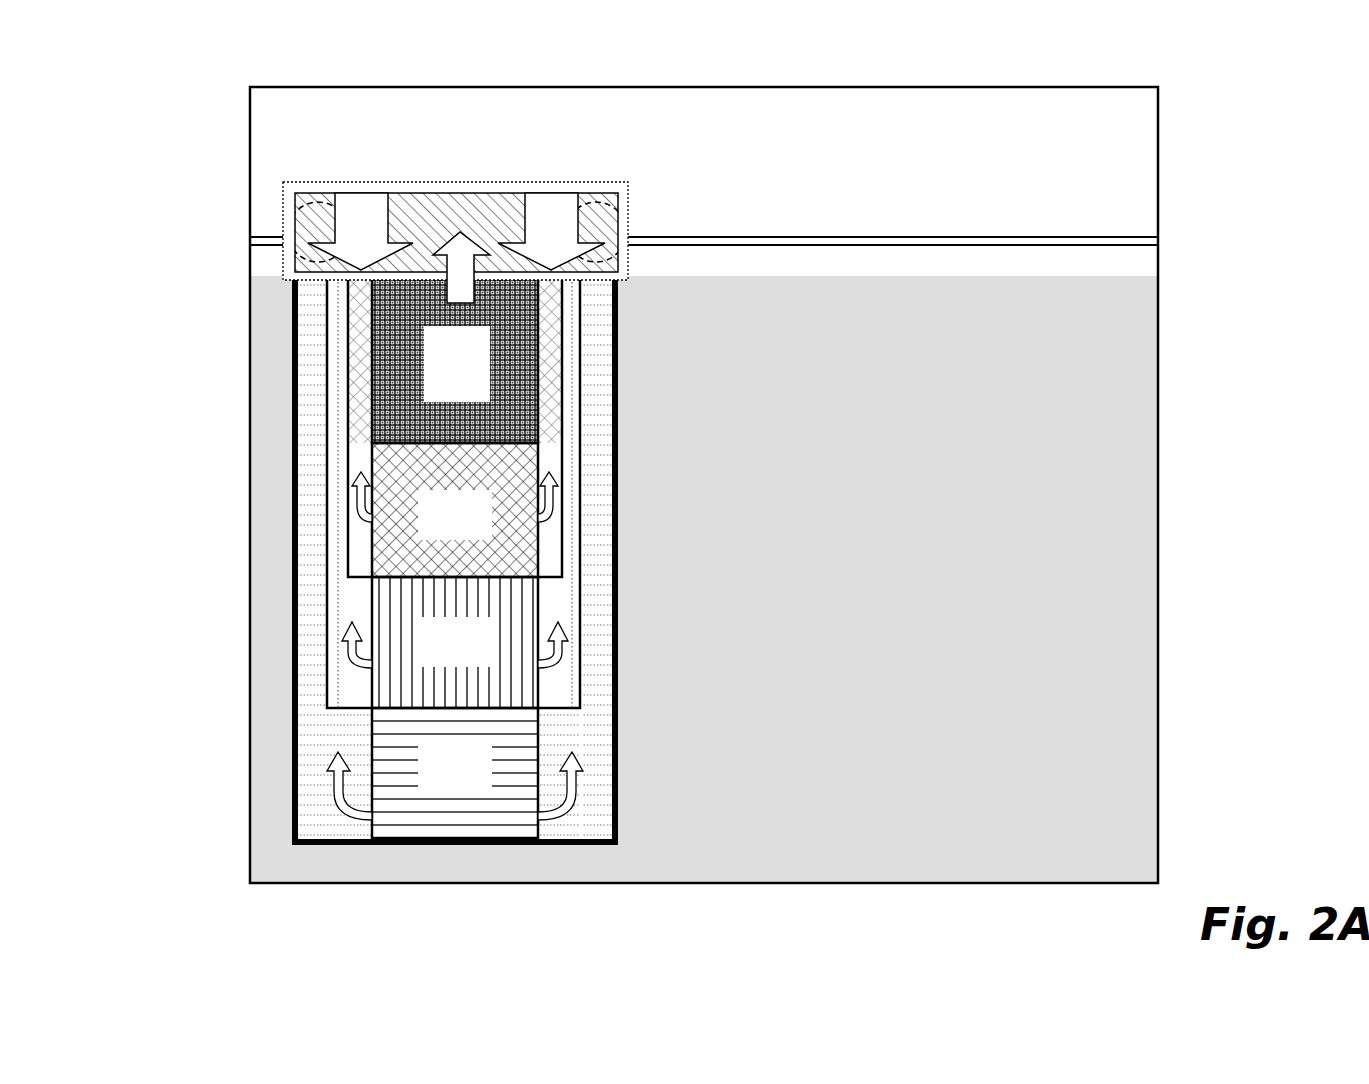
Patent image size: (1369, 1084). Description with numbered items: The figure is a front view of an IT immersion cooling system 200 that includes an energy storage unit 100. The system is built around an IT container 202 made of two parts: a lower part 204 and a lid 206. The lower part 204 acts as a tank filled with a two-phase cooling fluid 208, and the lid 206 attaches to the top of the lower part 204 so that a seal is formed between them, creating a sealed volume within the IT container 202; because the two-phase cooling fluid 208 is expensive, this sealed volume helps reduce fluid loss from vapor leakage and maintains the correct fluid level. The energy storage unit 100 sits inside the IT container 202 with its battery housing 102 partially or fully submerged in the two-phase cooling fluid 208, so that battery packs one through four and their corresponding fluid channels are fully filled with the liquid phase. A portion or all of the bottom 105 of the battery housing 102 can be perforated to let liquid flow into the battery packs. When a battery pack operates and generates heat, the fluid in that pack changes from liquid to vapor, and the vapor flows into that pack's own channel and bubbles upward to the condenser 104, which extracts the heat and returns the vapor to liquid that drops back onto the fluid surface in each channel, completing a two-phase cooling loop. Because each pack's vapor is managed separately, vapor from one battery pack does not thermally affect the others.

The IT immersion cooling system 200 is at (143, 97).
The energy storage unit 100 is at (488, 208).
The condenser 104 is at (636, 214).
The battery housing 102 is at (488, 578).
The bottom 105 is at (412, 846).
The IT container 202 is at (716, 485).
The lower part 204 is at (248, 253).
The lid 206 is at (248, 88).
The two-phase cooling fluid 208 is at (704, 579).